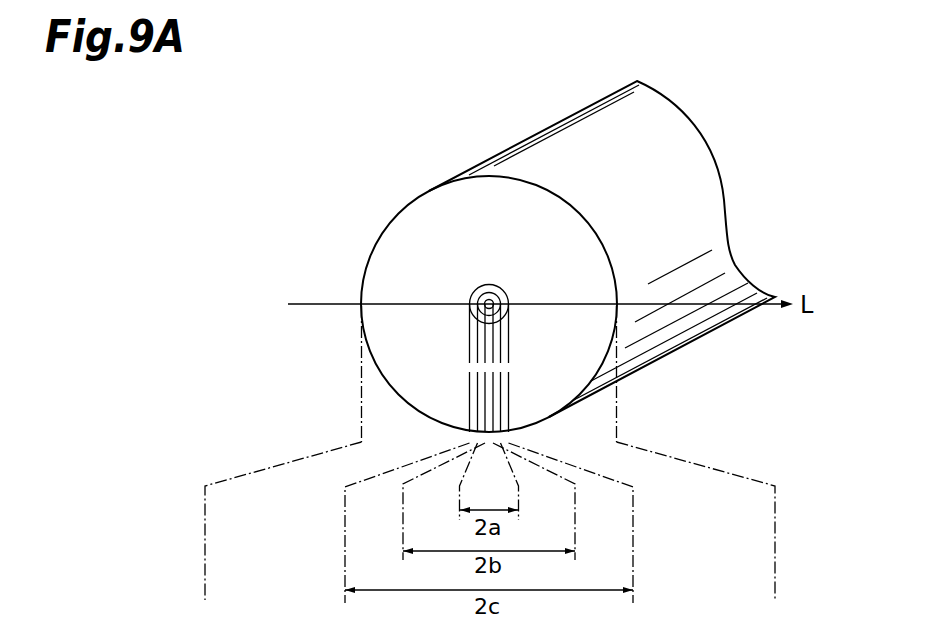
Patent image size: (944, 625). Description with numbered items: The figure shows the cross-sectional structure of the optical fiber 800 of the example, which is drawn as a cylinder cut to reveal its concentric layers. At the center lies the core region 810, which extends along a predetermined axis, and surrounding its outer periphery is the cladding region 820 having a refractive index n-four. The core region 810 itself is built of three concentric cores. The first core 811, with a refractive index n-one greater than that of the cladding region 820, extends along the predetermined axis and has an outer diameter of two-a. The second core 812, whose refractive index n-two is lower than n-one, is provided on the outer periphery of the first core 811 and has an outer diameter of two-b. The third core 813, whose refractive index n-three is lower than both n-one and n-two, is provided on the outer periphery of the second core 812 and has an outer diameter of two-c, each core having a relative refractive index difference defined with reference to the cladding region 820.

The optical fiber 800 is at (698, 188).
The core region 810 is at (425, 392).
The first core 811 is at (487, 299).
The second core 812 is at (489, 292).
The third core 813 is at (492, 284).
The cladding region 820 is at (382, 340).